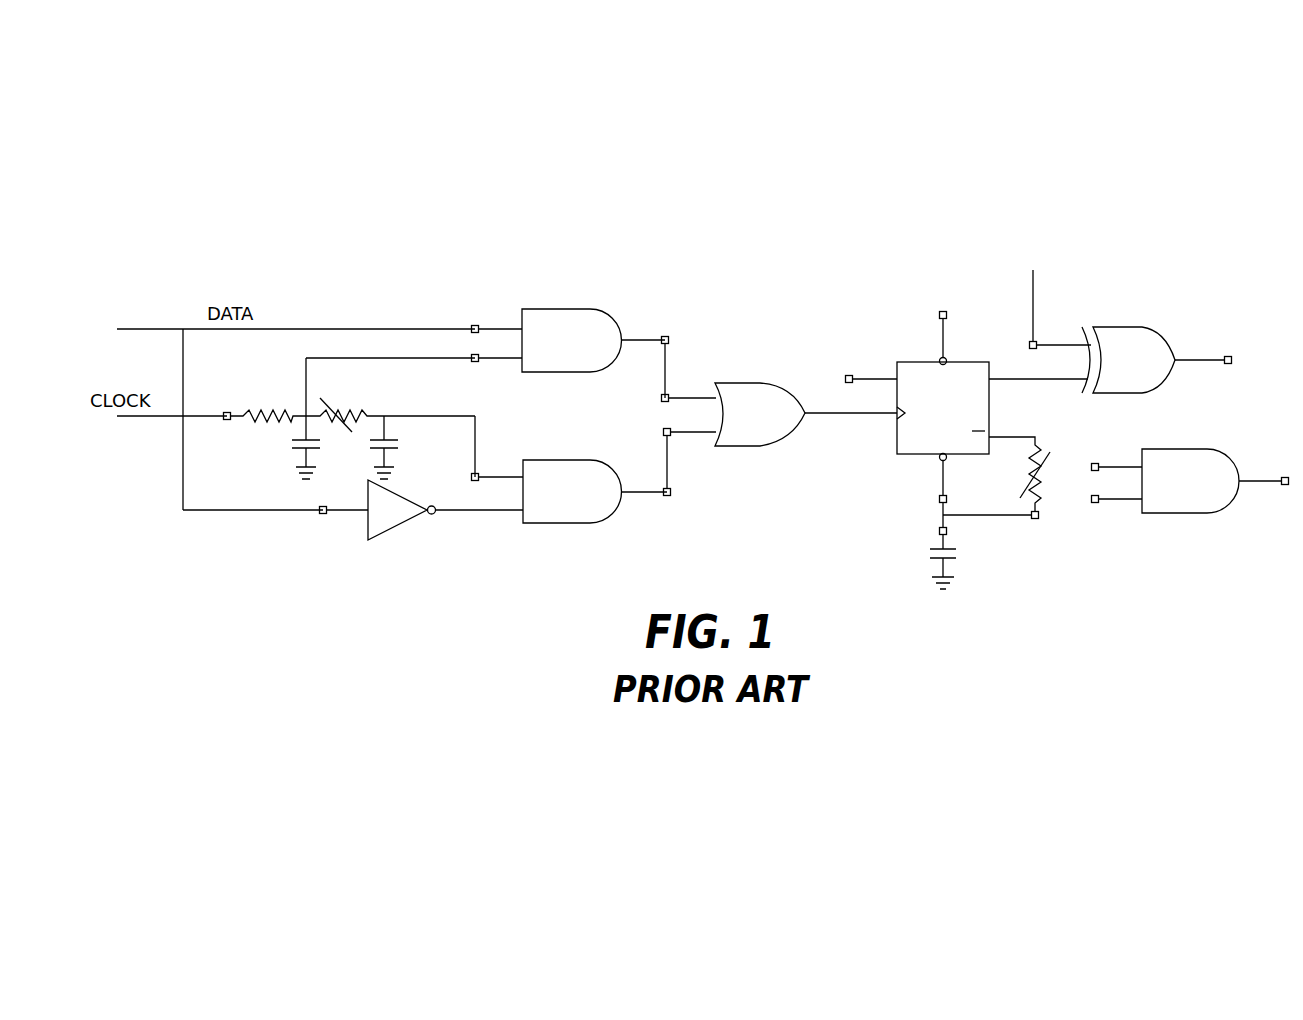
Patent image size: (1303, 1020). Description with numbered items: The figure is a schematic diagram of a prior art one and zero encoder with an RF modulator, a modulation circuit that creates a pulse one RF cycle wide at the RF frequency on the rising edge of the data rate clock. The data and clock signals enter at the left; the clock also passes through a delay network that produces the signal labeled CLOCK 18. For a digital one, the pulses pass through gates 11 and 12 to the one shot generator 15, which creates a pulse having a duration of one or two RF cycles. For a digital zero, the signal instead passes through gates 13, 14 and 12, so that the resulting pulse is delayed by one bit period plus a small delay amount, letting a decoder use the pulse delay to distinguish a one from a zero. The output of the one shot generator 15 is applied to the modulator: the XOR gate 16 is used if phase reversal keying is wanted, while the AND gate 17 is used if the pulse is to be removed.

The gate 11 is at (583, 325).
The gate 12 is at (762, 395).
The gate 13 is at (390, 513).
The gate 14 is at (587, 505).
The one shot generator 15 is at (920, 447).
The XOR gate 16 is at (1152, 347).
The AND gate 17 is at (1198, 507).
The clock signal 18 is at (459, 435).